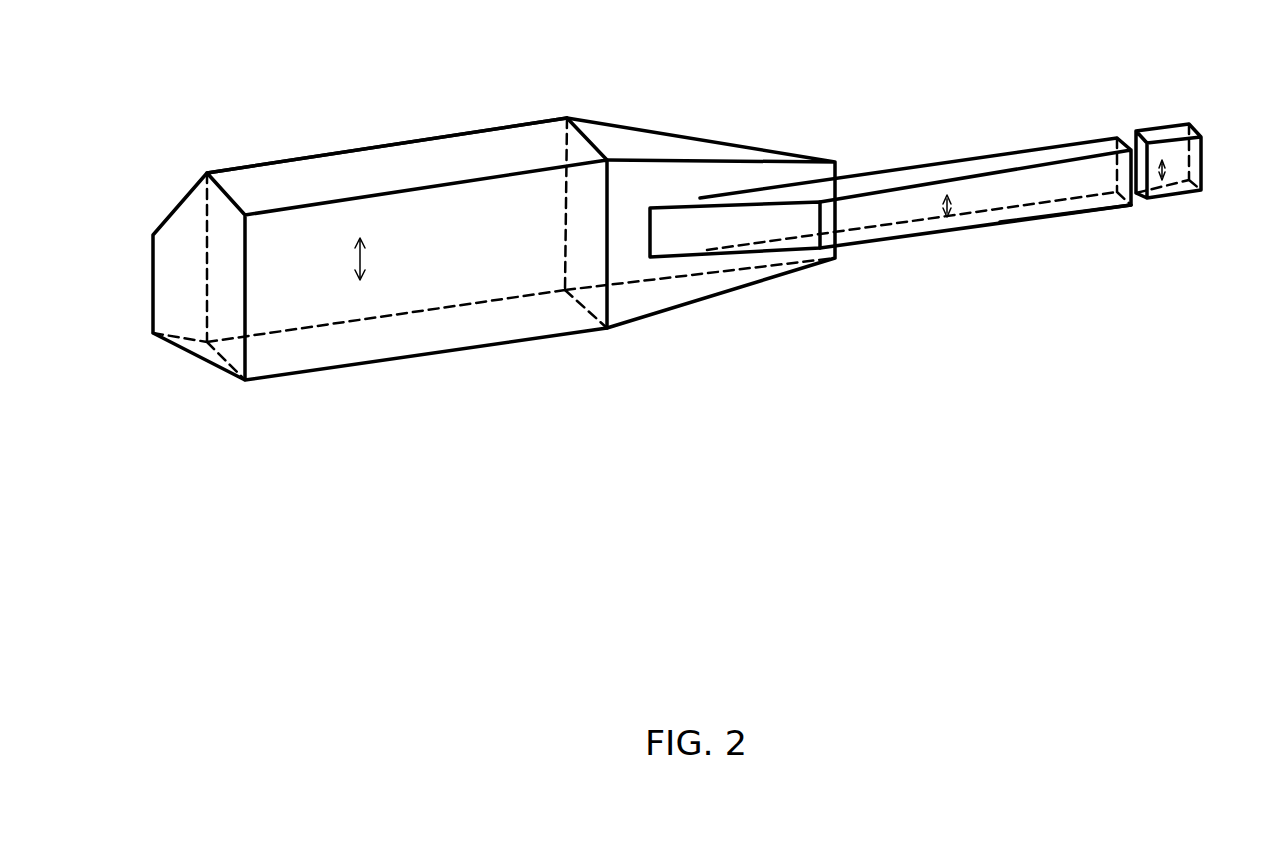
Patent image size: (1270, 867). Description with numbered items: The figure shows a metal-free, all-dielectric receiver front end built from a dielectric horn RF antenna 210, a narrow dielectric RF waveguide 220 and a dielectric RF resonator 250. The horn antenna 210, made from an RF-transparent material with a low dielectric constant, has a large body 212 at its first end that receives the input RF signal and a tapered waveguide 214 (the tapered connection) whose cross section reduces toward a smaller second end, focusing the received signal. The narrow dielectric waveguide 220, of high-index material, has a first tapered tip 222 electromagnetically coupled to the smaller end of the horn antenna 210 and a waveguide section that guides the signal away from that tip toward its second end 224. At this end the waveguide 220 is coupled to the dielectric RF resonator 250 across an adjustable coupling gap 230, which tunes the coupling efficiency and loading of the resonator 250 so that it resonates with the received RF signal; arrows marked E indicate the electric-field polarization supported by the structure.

The horn RF antenna 210 is at (432, 353).
The horn antenna body 212 is at (358, 163).
The tapered waveguide 214 is at (770, 332).
The narrow dielectric RF waveguide 220 is at (913, 168).
The first end of waveguide 222 is at (678, 237).
The second end of waveguide 224 is at (1088, 212).
The adjustable coupling gap 230 is at (1125, 121).
The dielectric RF resonator 250 is at (1207, 162).